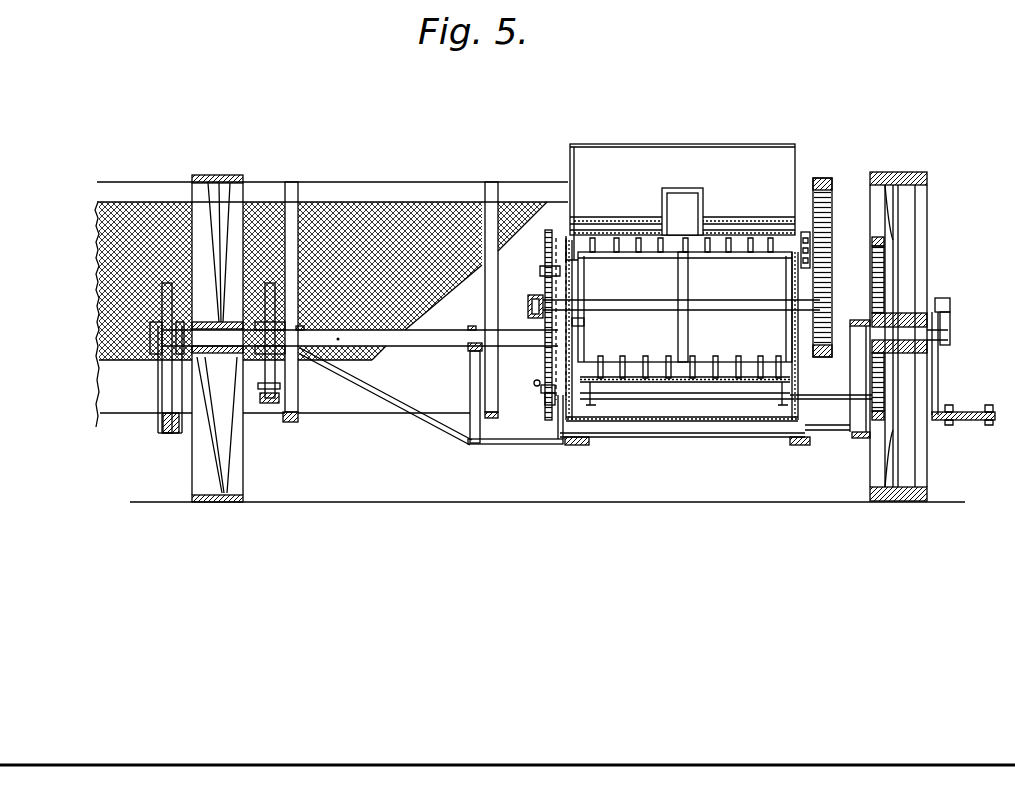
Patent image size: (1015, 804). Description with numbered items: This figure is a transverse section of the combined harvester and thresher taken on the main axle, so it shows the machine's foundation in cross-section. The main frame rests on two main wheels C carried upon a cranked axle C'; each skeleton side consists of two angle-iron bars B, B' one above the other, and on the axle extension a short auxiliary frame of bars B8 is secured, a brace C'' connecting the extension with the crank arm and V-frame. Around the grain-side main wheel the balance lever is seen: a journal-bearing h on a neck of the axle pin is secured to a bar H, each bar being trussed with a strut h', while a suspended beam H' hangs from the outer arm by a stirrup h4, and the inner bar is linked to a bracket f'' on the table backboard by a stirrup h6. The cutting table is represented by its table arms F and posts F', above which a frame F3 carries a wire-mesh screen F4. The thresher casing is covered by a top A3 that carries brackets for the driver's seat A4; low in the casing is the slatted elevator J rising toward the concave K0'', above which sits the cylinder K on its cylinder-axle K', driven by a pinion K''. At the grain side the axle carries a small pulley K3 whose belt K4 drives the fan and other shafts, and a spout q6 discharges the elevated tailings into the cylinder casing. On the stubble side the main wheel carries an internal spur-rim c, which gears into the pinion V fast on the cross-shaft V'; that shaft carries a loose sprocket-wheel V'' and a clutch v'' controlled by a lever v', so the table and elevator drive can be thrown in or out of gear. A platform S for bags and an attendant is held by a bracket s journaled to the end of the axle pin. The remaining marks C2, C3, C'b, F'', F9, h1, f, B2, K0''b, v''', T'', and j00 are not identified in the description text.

The main wheel C is at (220, 325).
The cranked axle C' is at (354, 338).
The brace C'' is at (386, 402).
The band wheel C2 is at (893, 172).
The base plate C3 is at (478, 446).
The base frame C'b is at (718, 449).
The table arm F is at (390, 427).
The post F' is at (409, 313).
The lower board F'' is at (285, 396).
The frame F3 is at (361, 185).
The wire-mesh screen F4 is at (393, 207).
The pin F9 is at (535, 380).
The bar H is at (136, 358).
The suspended beam H' is at (167, 449).
The journal-bearing h is at (184, 346).
The strut h' is at (247, 340).
The hanger rod h1 is at (167, 286).
The stirrup h4 is at (162, 418).
The stirrup h6 is at (279, 397).
The bracket f'' is at (291, 387).
The bracket f is at (506, 275).
The angle-iron bar B is at (708, 397).
The angle-iron bar B' is at (708, 319).
The upright bar B2 is at (473, 354).
The auxiliary frame bar B8 is at (357, 395).
The slatted elevator belt J is at (543, 236).
The top A3 is at (647, 144).
The driver's seat A4 is at (536, 214).
The spout q6 is at (690, 192).
The cylinder K is at (681, 330).
The cylinder-axle K' is at (744, 295).
The pinion K'' is at (846, 268).
The small pulley K3 is at (583, 296).
The belt K4 is at (533, 320).
The concave K0'' is at (681, 213).
The lower pins K0''b is at (685, 352).
The lever v' is at (591, 325).
The clutch v'' is at (535, 392).
The valve v''' is at (535, 273).
The pinion V is at (831, 382).
The cross-shaft V' is at (685, 424).
The loose sprocket-wheel V'' is at (532, 408).
The gear wheel T'' is at (824, 250).
The pawl j00 is at (832, 222).
The internal spur-rim c is at (872, 272).
The bracket s is at (939, 372).
The platform S is at (962, 412).